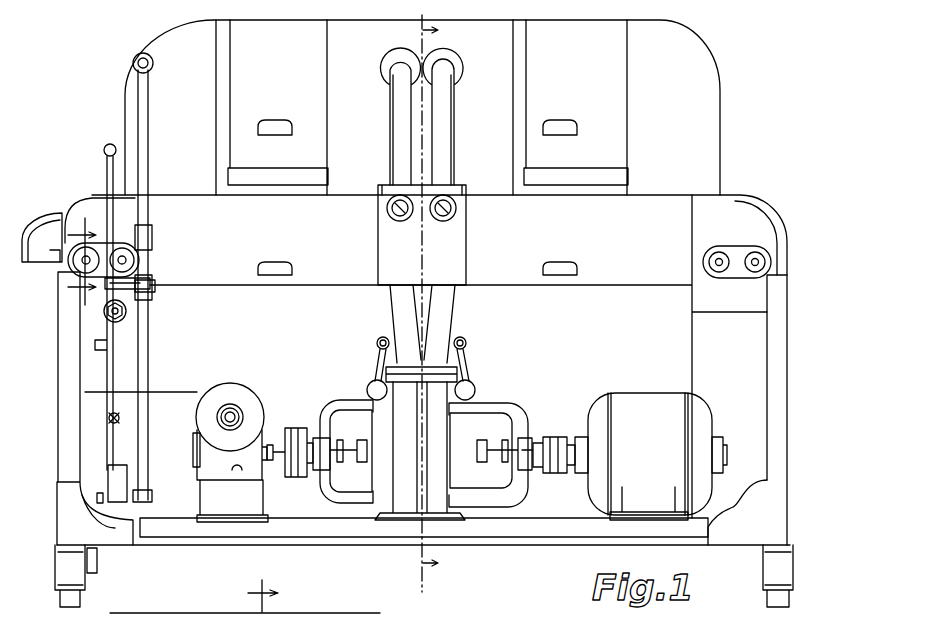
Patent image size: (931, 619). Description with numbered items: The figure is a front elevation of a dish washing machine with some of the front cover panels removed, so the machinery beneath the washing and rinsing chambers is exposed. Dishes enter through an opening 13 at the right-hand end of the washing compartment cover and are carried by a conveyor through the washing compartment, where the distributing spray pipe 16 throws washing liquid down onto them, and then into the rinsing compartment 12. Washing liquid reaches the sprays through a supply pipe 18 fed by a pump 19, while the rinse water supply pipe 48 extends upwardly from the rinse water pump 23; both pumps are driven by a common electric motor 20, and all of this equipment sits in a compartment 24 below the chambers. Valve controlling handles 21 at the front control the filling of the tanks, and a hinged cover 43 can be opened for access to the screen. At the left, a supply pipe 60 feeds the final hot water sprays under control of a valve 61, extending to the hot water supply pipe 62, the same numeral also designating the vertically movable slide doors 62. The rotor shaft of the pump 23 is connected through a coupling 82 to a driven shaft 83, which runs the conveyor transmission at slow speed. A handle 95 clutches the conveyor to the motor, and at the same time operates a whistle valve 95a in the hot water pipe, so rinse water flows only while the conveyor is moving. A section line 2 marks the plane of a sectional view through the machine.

The section line 2- 2 is at (437, 303).
The rinsing compartment 12 is at (77, 261).
The opening 13 is at (253, 592).
The distributing spray pipe 16 is at (196, 600).
The supply pipe 18 is at (450, 126).
The pump 19 is at (450, 425).
The electric motor 20 is at (638, 370).
The valve controlling handles 21 is at (373, 382).
The rinse water pump 23 is at (405, 437).
The compartment 24 is at (578, 348).
The hinged cover 43 is at (616, 275).
The rinse water supply pipe 48 is at (393, 124).
The supply pipe 60 is at (140, 100).
The valve 61 is at (150, 288).
The hot water supply pipe 62 is at (240, 83).
The coupling 82 is at (310, 425).
The driven shaft 83 is at (236, 410).
The handle 95 is at (108, 146).
The whistle valve 95a is at (104, 519).